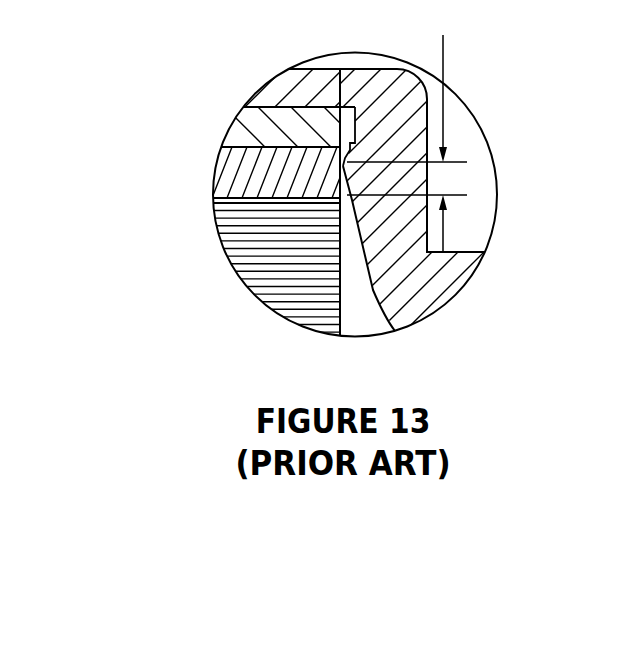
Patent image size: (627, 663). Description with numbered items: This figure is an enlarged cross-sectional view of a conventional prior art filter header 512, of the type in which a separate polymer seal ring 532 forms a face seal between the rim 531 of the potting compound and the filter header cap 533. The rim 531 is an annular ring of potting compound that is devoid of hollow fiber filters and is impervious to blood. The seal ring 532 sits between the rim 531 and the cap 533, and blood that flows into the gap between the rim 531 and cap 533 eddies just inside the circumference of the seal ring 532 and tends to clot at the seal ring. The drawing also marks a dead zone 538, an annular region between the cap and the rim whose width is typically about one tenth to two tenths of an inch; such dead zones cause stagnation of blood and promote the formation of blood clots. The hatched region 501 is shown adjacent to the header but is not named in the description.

The shaft 501 is at (285, 263).
The filter header cap 512 is at (229, 162).
The rim 531 is at (248, 178).
The seal ring 532 is at (347, 156).
The filter header cap 533 is at (402, 223).
The dead zone 538 is at (443, 35).